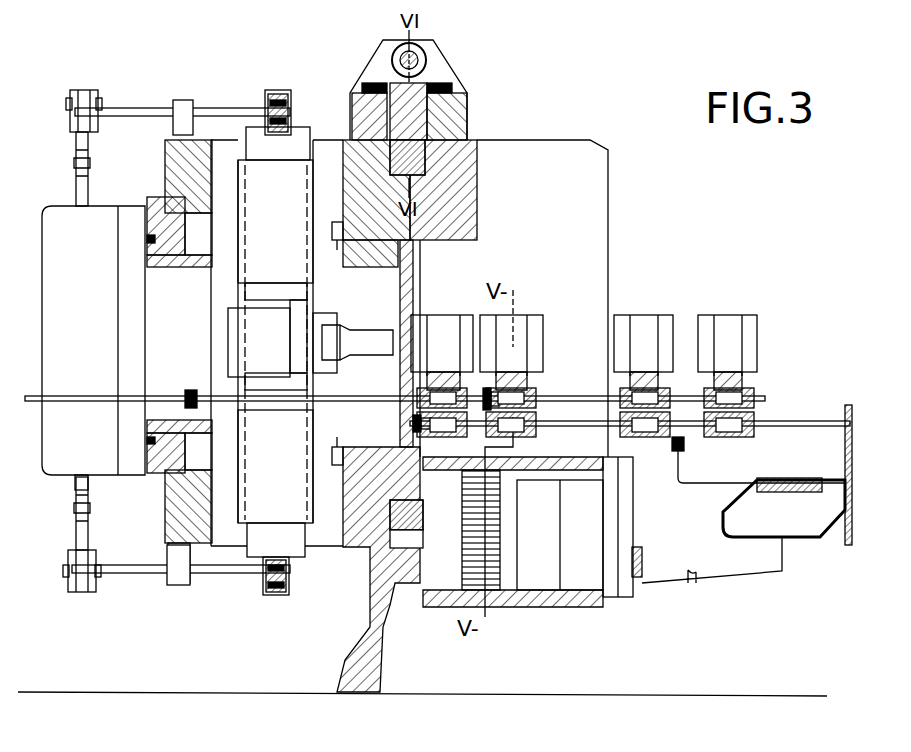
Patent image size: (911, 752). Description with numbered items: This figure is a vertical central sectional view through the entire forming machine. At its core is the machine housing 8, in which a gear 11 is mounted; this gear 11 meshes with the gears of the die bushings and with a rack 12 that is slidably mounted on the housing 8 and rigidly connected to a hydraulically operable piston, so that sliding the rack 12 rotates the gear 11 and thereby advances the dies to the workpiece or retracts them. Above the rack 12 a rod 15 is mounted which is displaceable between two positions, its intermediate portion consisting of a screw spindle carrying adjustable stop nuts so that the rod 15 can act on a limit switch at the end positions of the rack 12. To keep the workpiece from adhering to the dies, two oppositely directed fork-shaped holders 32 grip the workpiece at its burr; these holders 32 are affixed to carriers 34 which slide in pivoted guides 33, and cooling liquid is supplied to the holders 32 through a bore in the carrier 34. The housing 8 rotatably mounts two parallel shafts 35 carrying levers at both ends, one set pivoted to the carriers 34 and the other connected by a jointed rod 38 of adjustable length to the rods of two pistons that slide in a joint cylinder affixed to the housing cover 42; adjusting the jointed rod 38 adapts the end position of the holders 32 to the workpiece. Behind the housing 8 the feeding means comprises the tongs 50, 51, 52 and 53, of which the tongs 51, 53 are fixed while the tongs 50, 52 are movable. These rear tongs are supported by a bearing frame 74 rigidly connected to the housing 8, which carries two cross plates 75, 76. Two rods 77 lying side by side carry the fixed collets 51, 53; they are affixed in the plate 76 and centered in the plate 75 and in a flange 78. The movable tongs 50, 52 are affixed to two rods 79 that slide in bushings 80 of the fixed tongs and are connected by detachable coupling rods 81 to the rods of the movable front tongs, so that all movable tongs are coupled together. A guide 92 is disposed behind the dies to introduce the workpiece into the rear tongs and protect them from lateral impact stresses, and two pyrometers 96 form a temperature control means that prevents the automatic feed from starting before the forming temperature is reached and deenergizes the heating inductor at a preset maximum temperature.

The machine housing 8 is at (178, 186).
The gear 11 is at (430, 160).
The rack 12 is at (450, 96).
The rod 15 is at (417, 63).
The holder 32 is at (300, 296).
The pivoted guide 33 is at (255, 231).
The carrier 34 is at (298, 135).
The shaft 35 is at (228, 112).
The jointed rod 38 is at (90, 152).
The housing cover 42 is at (140, 338).
The tongs 50 is at (735, 332).
The tongs 51 is at (647, 332).
The tongs 52 is at (530, 330).
The tongs 53 is at (443, 335).
The bearing frame 74 is at (716, 560).
The cross plate 75 is at (853, 462).
The cross plate 76 is at (686, 450).
The rod 77 is at (570, 426).
The flange 78 is at (430, 470).
The rod 79 is at (588, 398).
The bushing 80 is at (515, 376).
The coupling rod 81 is at (345, 400).
The guide 92 is at (370, 338).
The pyrometer 96 is at (337, 226).